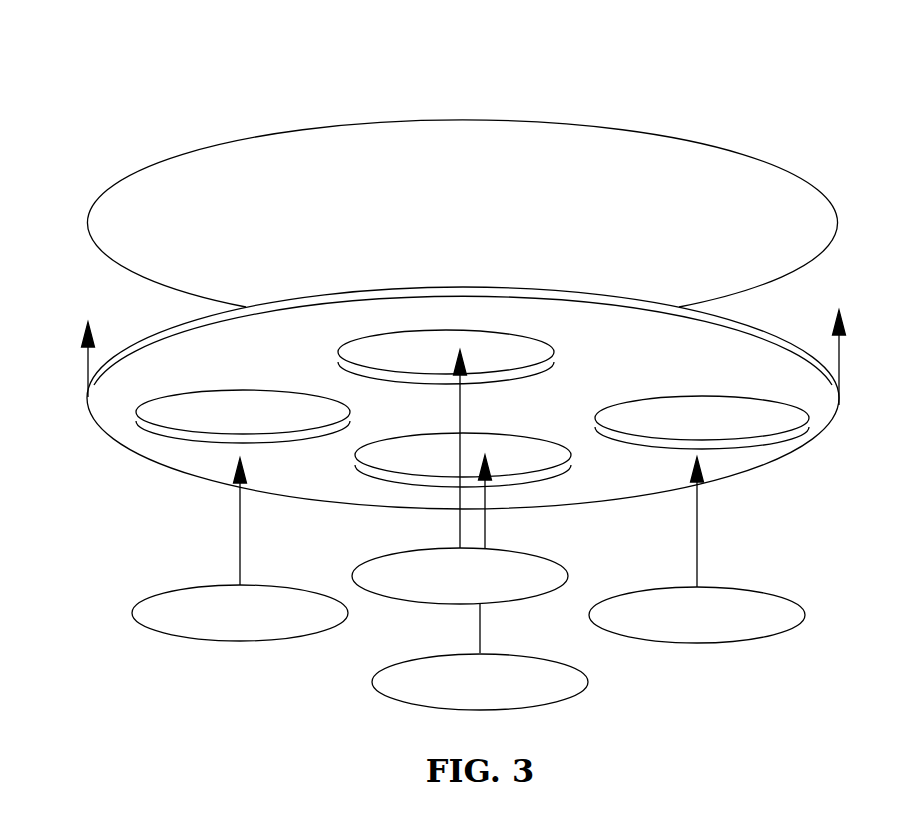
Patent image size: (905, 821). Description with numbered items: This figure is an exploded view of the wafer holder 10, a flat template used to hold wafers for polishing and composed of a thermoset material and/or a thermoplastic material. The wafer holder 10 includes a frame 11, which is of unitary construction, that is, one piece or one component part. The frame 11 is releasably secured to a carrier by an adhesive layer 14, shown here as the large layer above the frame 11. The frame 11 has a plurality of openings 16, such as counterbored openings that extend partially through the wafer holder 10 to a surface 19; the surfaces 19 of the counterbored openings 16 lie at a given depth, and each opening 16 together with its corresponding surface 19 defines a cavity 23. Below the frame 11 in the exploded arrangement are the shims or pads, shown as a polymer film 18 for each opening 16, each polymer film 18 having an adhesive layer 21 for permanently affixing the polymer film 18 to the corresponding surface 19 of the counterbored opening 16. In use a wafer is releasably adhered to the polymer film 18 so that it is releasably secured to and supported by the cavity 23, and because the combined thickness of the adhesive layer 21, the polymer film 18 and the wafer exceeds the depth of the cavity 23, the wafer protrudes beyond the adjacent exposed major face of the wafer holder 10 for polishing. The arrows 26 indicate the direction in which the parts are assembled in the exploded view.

The wafer holder 10 is at (688, 82).
The frame 11 is at (615, 370).
The adhesive layer 14 is at (685, 242).
The openings 16 is at (448, 436).
The polymer film 18 is at (456, 530).
The surface 19 is at (200, 422).
The adhesive layer 21 is at (155, 595).
The cavity 23 is at (233, 435).
The air flow arrow 26 is at (442, 341).